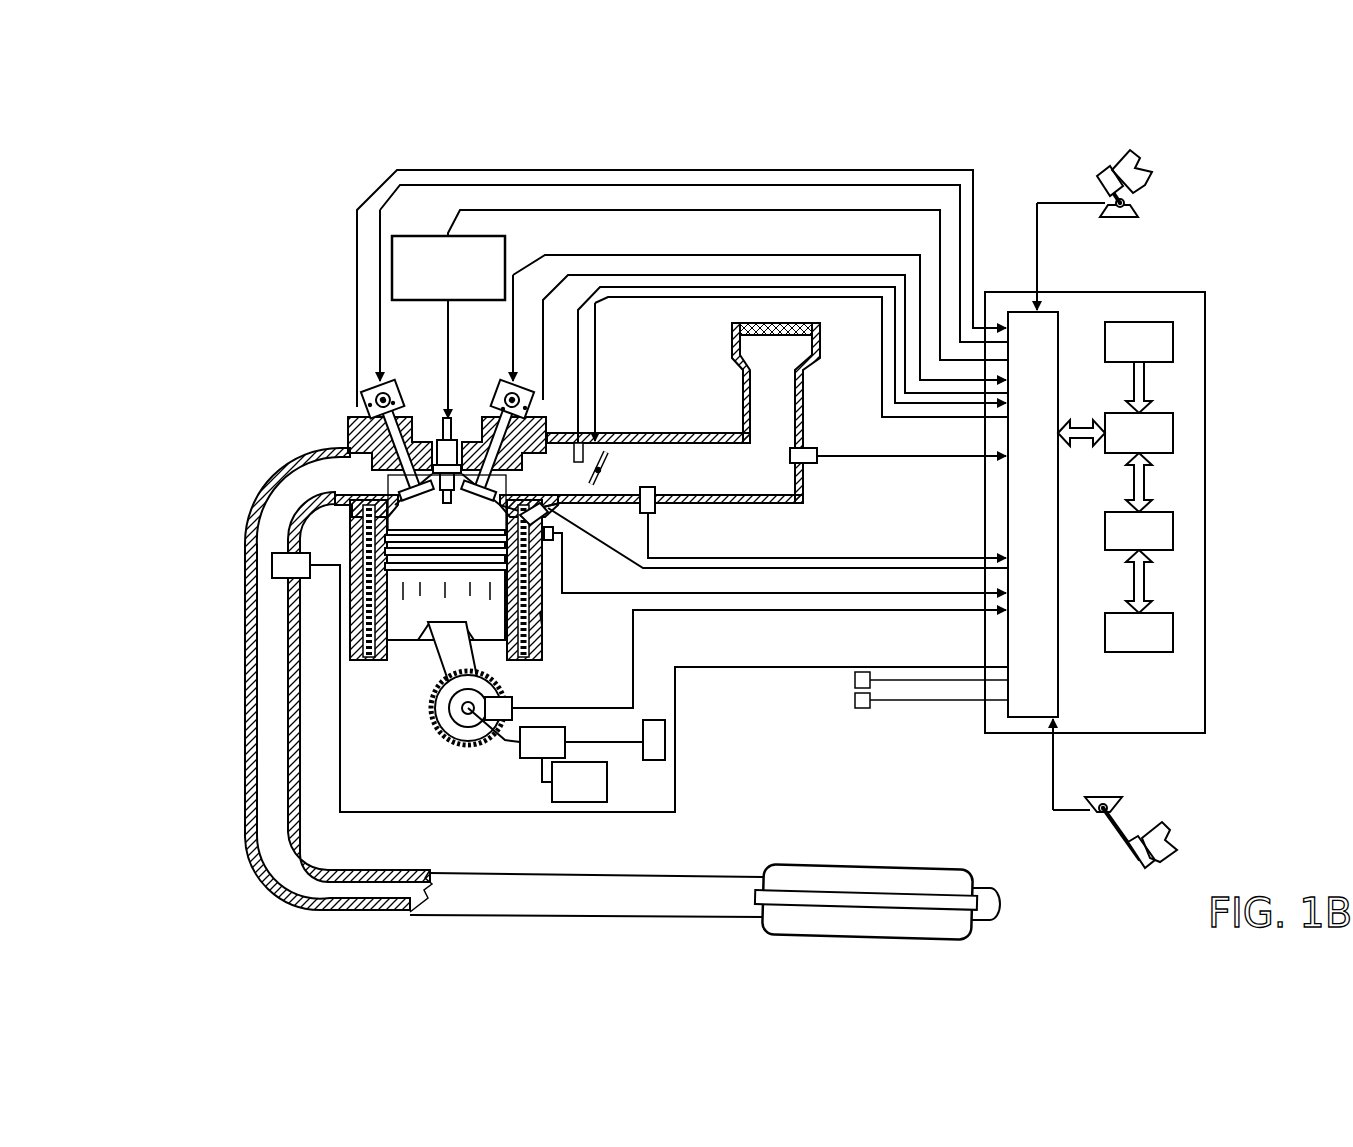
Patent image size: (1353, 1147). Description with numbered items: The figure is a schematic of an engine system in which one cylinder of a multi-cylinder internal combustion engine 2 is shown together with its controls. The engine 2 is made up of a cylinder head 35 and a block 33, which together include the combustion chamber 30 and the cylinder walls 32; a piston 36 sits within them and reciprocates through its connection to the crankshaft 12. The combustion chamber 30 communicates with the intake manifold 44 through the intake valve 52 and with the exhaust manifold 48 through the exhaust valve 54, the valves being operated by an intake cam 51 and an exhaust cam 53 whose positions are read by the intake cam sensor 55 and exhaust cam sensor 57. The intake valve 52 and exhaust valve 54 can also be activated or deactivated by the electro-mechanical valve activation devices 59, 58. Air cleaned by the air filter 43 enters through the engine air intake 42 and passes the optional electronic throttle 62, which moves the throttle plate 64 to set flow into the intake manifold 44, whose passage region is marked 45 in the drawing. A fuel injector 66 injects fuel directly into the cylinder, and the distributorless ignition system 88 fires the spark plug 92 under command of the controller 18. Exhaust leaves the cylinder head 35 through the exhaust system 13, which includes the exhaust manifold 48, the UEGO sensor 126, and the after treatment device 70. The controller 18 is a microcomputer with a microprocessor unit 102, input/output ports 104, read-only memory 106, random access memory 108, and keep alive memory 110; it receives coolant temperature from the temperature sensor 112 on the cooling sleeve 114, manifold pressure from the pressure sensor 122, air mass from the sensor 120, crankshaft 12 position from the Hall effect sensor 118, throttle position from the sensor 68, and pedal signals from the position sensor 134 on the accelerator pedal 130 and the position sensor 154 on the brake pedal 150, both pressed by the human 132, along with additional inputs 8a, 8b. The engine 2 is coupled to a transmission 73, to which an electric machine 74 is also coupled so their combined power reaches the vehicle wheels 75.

The internal combustion engine 2 is at (288, 375).
The exhaust system 13 is at (148, 550).
The crankshaft 12 is at (447, 735).
The controller 18 is at (1205, 292).
The combustion chamber 30 is at (528, 645).
The cylinder walls 32 is at (384, 655).
The block 33 is at (546, 600).
The cylinder head 35 is at (346, 418).
The piston 36 is at (432, 612).
The engine air intake 42 is at (655, 342).
The air filter 43 is at (790, 336).
The intake manifold 44 is at (573, 476).
The intake manifold 45 is at (664, 476).
The exhaust manifold 48 is at (285, 518).
The intake cam 51 is at (509, 393).
The intake valve 52 is at (497, 482).
The exhaust cam 53 is at (386, 393).
The exhaust valve 54 is at (350, 460).
The intake cam sensor 55 is at (525, 408).
The exhaust cam sensor 57 is at (370, 404).
The valve activation device 58 is at (393, 403).
The valve activation device 59 is at (503, 409).
The electronic throttle 62 is at (603, 470).
The throttle plate 64 is at (600, 484).
The fuel injector 66 is at (555, 532).
The throttle position sensor 68 is at (576, 445).
The after treatment device 70 is at (803, 868).
The transmission 73 is at (581, 742).
The electric machine 74 is at (574, 780).
The vehicle wheels 75 is at (653, 762).
The distributorless ignition system 88 is at (400, 236).
The spark plug 92 is at (450, 418).
The microprocessor unit 102 is at (1173, 437).
The input/output ports 104 is at (1058, 322).
The read-only memory 106 is at (1173, 342).
The random access memory 108 is at (1173, 532).
The keep alive memory 110 is at (1173, 632).
The temperature sensor 112 is at (560, 556).
The cooling sleeve 114 is at (548, 620).
The Hall effect sensor 118 is at (510, 698).
The air mass sensor 120 is at (815, 450).
The pressure sensor 122 is at (640, 508).
The UEGO sensor 126 is at (300, 553).
The accelerator pedal 130 is at (1100, 175).
The human 132 is at (1148, 175).
The position sensor 134 is at (1132, 205).
The brake pedal 150 is at (1127, 855).
The position sensor 154 is at (1095, 805).
The sensor 8a is at (855, 682).
The sensor 8b is at (855, 702).